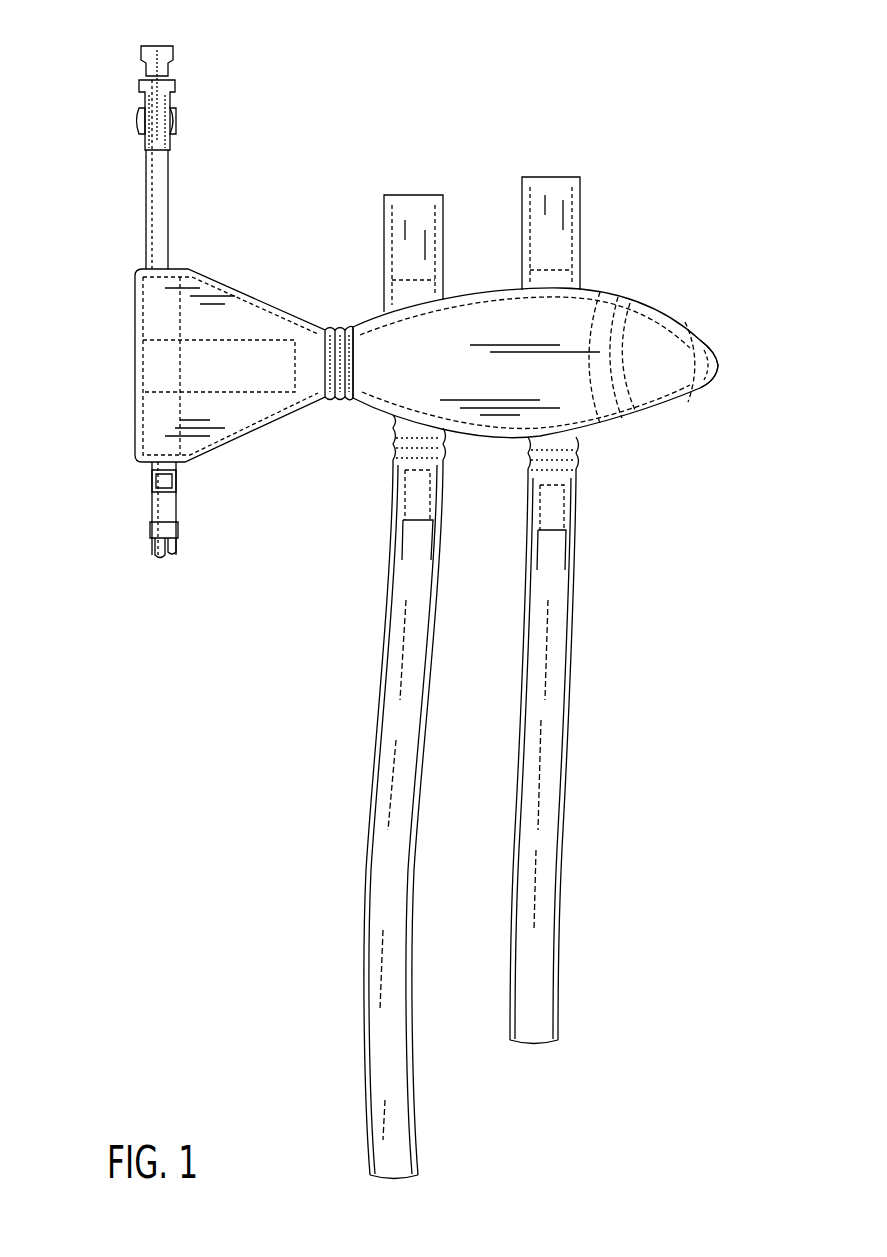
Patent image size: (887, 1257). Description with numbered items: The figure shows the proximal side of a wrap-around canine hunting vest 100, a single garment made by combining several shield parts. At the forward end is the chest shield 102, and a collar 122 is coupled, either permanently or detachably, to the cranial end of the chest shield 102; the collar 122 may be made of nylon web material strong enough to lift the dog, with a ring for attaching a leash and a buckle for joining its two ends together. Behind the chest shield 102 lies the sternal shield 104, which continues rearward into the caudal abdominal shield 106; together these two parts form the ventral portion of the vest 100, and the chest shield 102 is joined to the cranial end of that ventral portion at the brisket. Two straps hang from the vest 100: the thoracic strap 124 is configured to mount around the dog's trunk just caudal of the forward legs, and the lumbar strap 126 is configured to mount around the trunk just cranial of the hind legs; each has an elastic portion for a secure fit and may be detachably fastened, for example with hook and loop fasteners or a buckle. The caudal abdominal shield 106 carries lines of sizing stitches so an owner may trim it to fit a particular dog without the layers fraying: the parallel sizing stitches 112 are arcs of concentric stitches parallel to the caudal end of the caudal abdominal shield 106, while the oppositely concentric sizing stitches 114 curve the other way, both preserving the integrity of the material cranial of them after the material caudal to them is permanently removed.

The wrap-around canine hunting vest 100 is at (618, 152).
The chest shield 102 is at (246, 412).
The sternal shield 104 is at (487, 406).
The caudal abdominal shield 106 is at (697, 355).
The parallel sizing stitches 112 is at (710, 355).
The oppositely concentric sizing stitches 114 is at (607, 350).
The collar 122 is at (146, 214).
The thoracic strap 124 is at (368, 826).
The lumbar strap 126 is at (576, 828).